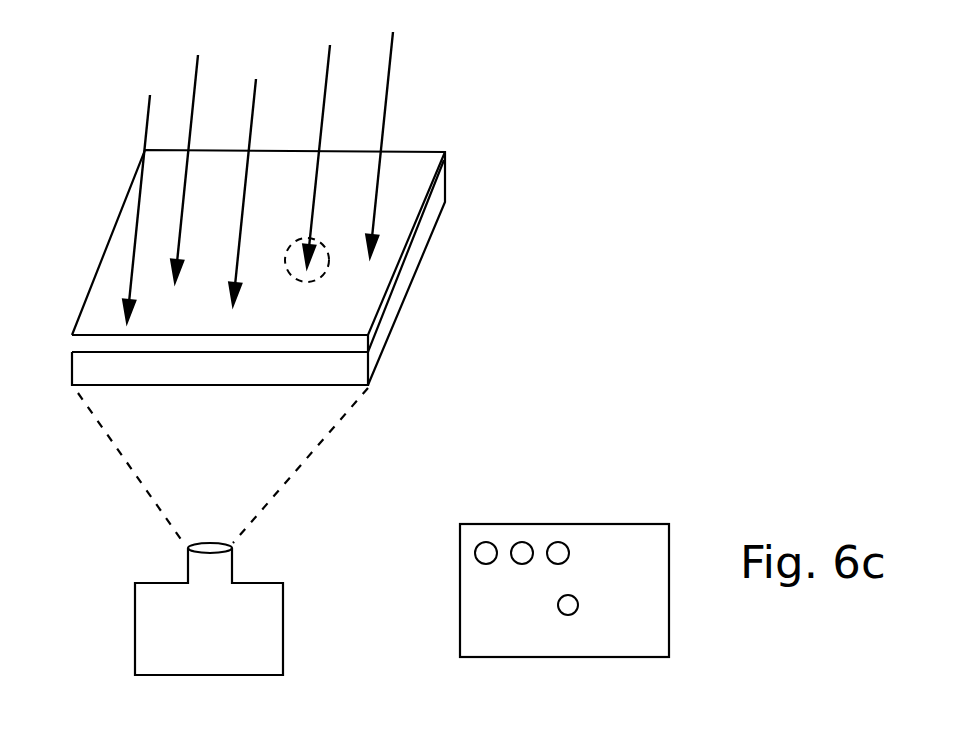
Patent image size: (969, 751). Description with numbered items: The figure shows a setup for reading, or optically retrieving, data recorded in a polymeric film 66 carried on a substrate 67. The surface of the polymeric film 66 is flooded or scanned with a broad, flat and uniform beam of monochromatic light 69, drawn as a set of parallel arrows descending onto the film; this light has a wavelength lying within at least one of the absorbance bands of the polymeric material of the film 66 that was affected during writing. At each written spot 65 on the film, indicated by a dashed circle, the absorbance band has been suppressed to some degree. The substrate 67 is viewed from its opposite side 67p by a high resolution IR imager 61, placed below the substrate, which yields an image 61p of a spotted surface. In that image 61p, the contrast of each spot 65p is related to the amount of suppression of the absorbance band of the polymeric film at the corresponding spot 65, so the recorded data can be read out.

The high resolution IR imager 61 is at (268, 633).
The image 61p is at (457, 523).
The spot 65 is at (318, 267).
The spot 65p is at (577, 612).
The polymeric film 66 is at (347, 342).
The substrate 67 is at (353, 367).
The opposite side 67p is at (302, 405).
The beam of monochromatic light 69 is at (258, 176).